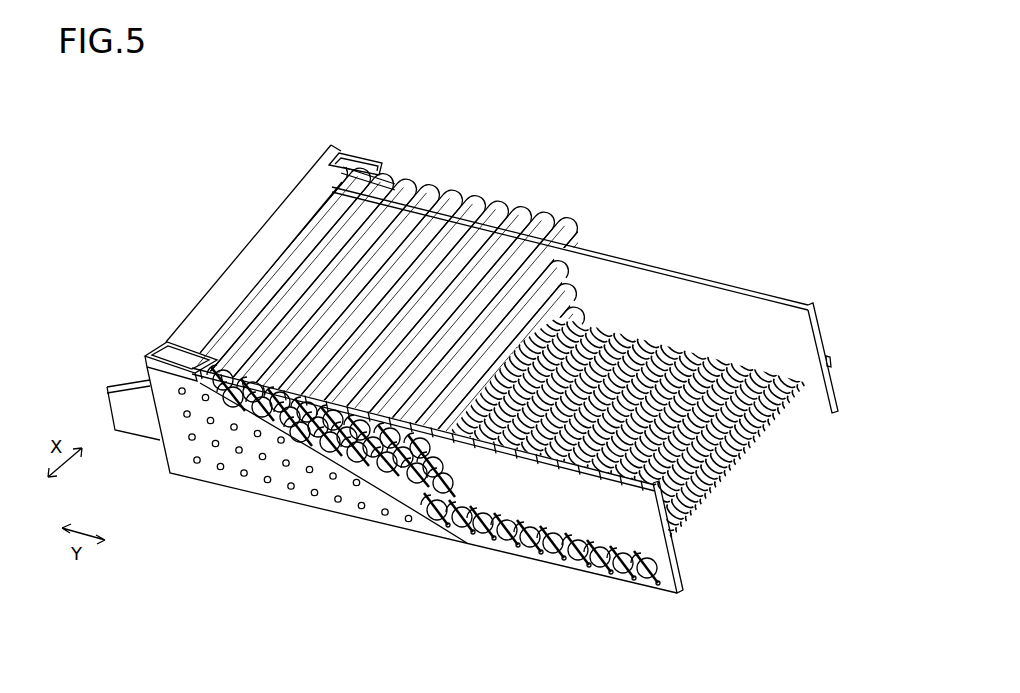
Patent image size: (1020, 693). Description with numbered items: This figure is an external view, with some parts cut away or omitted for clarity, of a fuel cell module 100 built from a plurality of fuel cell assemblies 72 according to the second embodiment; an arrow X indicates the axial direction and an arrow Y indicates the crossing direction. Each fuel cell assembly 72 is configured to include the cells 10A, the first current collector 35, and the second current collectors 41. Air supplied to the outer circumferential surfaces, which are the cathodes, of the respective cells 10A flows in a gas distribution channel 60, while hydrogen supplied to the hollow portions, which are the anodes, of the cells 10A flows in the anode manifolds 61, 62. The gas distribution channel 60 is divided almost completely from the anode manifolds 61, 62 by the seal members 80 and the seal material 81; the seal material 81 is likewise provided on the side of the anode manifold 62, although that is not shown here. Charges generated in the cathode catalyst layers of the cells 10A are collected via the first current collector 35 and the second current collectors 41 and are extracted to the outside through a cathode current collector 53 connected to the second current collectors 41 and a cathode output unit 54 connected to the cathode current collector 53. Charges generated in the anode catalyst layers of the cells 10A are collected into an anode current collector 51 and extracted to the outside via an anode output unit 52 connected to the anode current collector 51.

The fuel cell module 100 is at (491, 68).
The anode output unit 52 is at (291, 175).
The anode manifold 62 is at (374, 171).
The anode current collector 51 is at (397, 182).
The cell 10A is at (430, 190).
The fuel cell assembly 72 is at (592, 297).
The gas distribution channel 60 is at (705, 312).
The seal member 80 is at (782, 294).
The anode manifold 61 is at (220, 372).
The seal material 81 is at (184, 340).
The cathode output unit 54 is at (113, 385).
The second current collector 41 is at (220, 467).
The cathode current collector 53 is at (258, 488).
The first current collector 35 is at (708, 518).